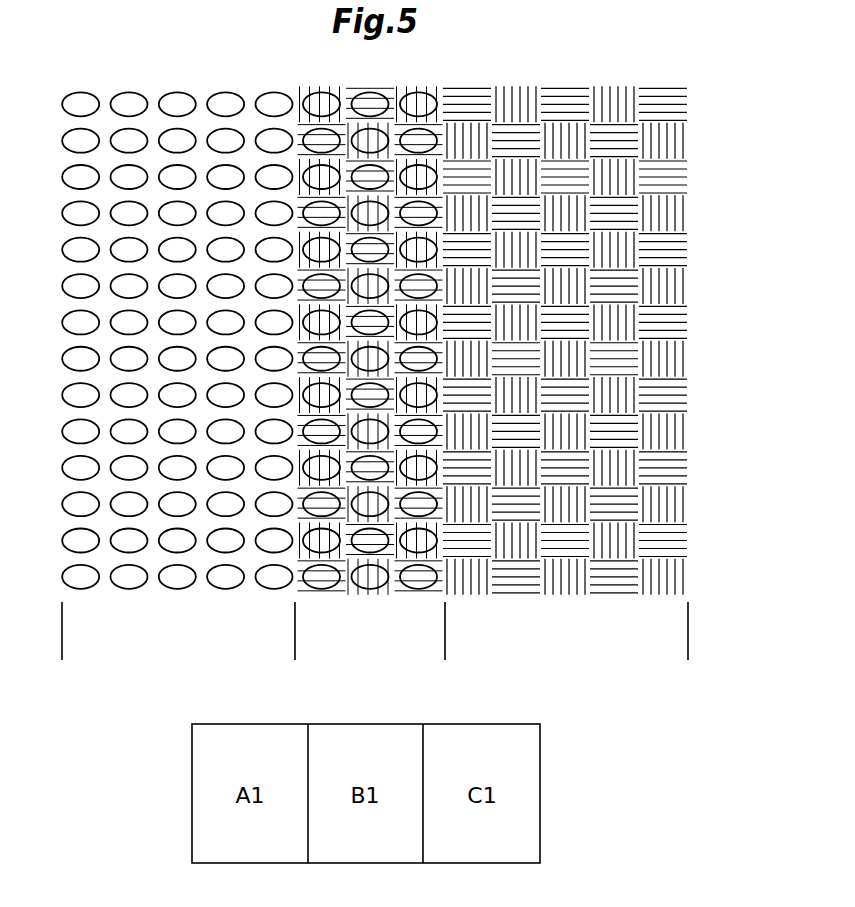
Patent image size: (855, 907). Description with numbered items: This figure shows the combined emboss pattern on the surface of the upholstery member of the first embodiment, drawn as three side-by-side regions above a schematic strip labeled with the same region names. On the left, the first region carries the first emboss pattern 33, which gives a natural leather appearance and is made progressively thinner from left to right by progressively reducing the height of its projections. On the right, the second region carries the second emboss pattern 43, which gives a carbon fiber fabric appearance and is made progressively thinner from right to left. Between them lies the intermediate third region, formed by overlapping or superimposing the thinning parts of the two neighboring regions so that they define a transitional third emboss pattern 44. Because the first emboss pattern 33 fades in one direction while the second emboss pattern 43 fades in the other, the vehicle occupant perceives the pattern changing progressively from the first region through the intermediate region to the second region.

The first emboss pattern 33 is at (138, 632).
The third emboss pattern 44 is at (398, 637).
The second emboss pattern 43 is at (628, 635).